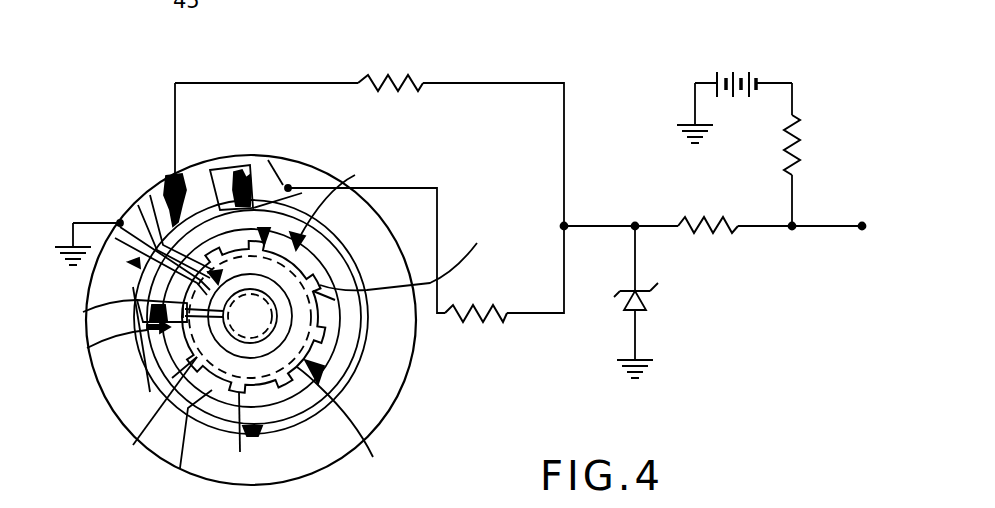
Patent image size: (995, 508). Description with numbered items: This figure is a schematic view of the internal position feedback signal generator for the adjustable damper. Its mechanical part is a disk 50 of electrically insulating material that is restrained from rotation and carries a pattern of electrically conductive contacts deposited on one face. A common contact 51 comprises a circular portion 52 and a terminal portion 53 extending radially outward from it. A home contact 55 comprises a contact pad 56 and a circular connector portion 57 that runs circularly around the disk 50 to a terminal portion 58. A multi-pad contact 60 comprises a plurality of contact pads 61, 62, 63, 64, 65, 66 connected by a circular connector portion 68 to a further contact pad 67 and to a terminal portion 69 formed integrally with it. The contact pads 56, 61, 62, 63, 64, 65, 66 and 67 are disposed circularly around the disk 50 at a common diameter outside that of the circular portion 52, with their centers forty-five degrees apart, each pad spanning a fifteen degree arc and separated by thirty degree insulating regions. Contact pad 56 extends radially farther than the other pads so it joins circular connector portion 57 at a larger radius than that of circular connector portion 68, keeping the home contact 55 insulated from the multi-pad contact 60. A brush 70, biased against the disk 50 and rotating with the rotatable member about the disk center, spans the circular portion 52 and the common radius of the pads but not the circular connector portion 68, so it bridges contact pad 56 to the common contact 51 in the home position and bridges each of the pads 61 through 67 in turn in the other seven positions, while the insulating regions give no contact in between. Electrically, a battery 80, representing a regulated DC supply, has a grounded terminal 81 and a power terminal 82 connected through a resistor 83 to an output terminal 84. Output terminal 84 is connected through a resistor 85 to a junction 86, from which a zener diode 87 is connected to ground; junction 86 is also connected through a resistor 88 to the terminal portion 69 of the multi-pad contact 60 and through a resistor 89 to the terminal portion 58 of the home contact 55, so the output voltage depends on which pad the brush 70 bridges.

The disk 50 is at (380, 387).
The common contact 51 is at (135, 263).
The circular portion 52 is at (279, 400).
The terminal portion 53 is at (121, 226).
The home contact 55 is at (150, 328).
The contact pad 56 is at (97, 311).
The circular connector portion 57 is at (407, 254).
The terminal portion 58 is at (266, 160).
The multi-pad contact 60 is at (365, 235).
The contact pad 61 is at (152, 415).
The contact pad 62 is at (242, 434).
The contact pad 63 is at (343, 421).
The contact pad 64 is at (320, 328).
The contact pad 65 is at (302, 272).
The contact pad 66 is at (264, 228).
The contact pad 67 is at (213, 257).
The circular connector portion 68 is at (186, 444).
The terminal portion 69 is at (150, 193).
The brush 70 is at (154, 363).
The battery 80 is at (730, 50).
The grounded terminal 81 is at (712, 82).
The power terminal 82 is at (762, 82).
The resistor 83 is at (794, 150).
The output terminal 84 is at (864, 224).
The resistor 85 is at (703, 232).
The junction 86 is at (635, 226).
The zener diode 87 is at (640, 300).
The resistor 88 is at (392, 74).
The resistor 89 is at (490, 318).